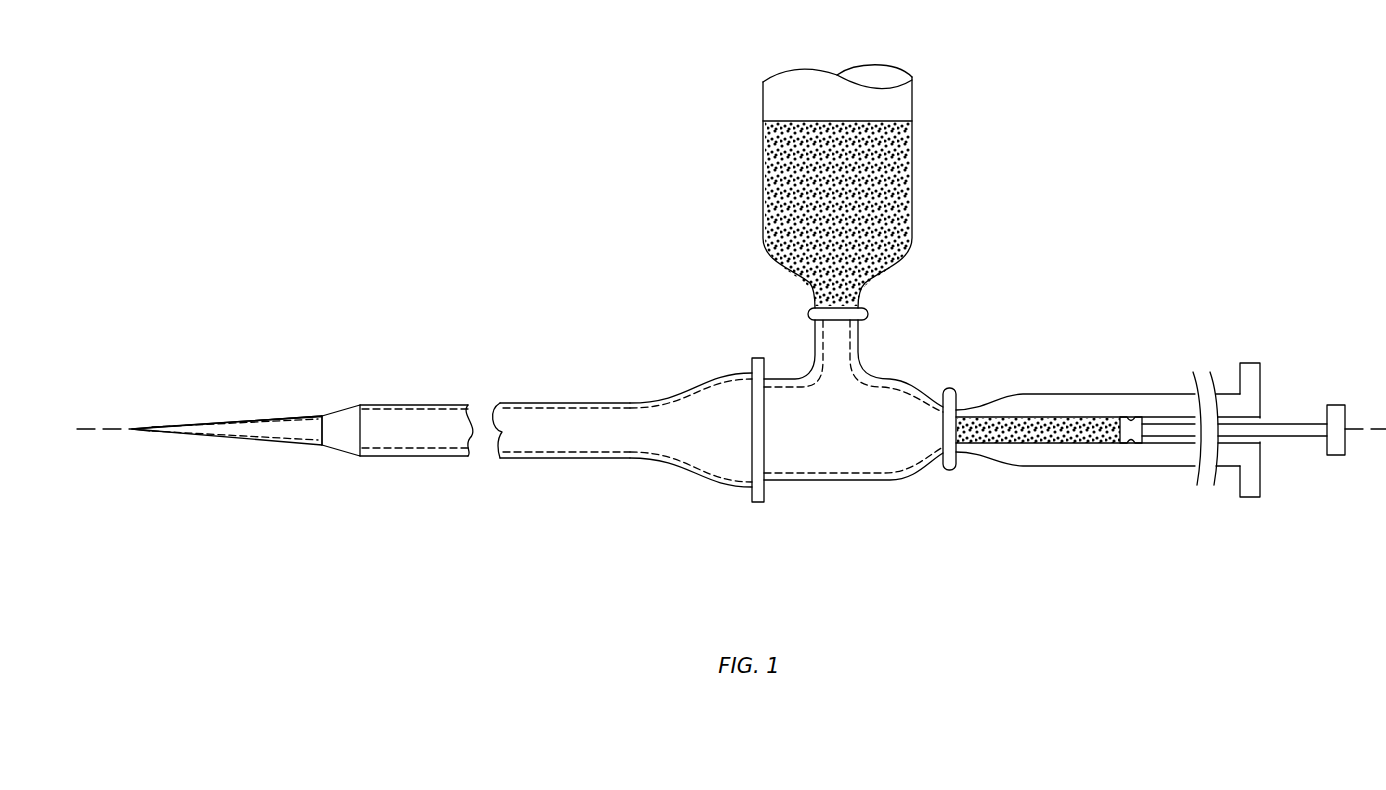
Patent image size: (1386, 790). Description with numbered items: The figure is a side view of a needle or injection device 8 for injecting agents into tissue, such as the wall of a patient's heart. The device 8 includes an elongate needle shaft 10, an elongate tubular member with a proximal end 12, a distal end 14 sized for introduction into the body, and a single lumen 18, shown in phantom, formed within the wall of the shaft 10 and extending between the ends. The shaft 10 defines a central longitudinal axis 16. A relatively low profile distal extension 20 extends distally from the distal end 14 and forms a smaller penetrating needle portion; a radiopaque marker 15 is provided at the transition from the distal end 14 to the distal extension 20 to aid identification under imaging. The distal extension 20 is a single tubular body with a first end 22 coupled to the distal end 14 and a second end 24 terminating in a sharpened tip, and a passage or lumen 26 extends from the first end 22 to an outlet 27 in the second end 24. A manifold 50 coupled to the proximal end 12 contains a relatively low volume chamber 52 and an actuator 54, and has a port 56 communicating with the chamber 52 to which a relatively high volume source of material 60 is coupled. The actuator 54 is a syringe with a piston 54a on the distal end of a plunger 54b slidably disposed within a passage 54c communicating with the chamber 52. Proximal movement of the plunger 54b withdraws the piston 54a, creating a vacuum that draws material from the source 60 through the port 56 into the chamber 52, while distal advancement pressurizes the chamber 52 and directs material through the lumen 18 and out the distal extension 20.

The injection device 8 is at (1040, 250).
The shaft 10 is at (622, 416).
The proximal end 12 is at (672, 462).
The distal end 14 is at (373, 403).
The radiopaque marker 15 is at (345, 453).
The central longitudinal axis 16 is at (103, 430).
The lumen 18 is at (537, 458).
The distal extension 20 is at (230, 444).
The first end 22 is at (318, 416).
The second end 24 is at (197, 419).
The lumen 26 is at (222, 440).
The outlet 27 is at (153, 427).
The manifold 50 is at (847, 431).
The chamber 52 is at (800, 433).
The actuator 54 is at (1160, 431).
The piston 54a is at (1130, 417).
The plunger 54b is at (1333, 405).
The passage 54c is at (1108, 443).
The port 56 is at (870, 313).
The source of material 60 is at (930, 186).